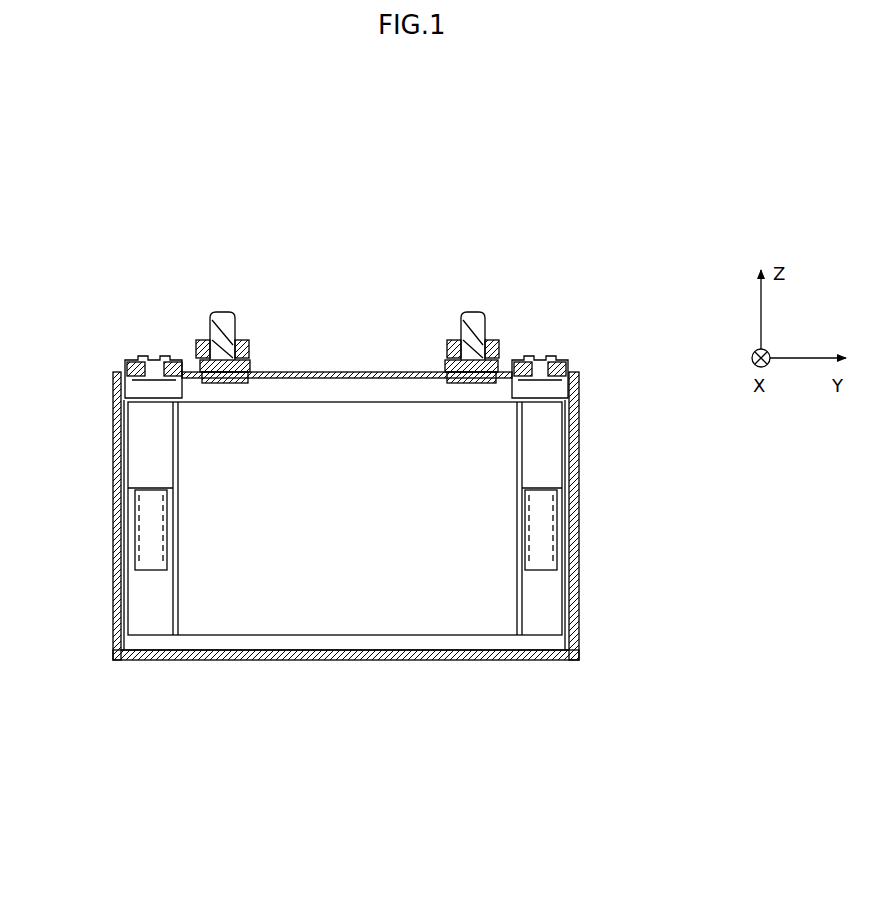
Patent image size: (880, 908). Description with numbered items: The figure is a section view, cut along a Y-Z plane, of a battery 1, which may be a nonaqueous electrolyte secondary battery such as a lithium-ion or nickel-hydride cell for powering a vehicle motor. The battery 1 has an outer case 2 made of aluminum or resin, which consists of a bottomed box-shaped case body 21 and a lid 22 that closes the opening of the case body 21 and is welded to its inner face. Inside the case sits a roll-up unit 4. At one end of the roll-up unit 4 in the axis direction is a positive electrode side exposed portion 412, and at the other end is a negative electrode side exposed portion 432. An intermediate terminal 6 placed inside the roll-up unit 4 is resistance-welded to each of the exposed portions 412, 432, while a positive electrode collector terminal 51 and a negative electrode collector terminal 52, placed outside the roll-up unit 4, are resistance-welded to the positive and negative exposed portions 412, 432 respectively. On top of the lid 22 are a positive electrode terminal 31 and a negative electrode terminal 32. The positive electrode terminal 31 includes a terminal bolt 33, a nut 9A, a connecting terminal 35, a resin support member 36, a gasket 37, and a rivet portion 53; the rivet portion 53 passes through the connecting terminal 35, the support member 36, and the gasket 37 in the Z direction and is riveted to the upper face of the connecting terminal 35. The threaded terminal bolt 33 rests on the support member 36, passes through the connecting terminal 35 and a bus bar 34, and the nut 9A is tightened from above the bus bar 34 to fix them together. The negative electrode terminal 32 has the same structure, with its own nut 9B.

The battery 1 is at (582, 170).
The outer case 2 is at (292, 662).
The case body 21 is at (250, 662).
The lid 22 is at (340, 372).
The roll-up unit 4 is at (375, 615).
The intermediate terminal 6 is at (136, 525).
The nut 9A is at (233, 342).
The negative terminal 9B is at (462, 344).
The positive electrode terminal 31 is at (204, 293).
The negative electrode terminal 32 is at (496, 293).
The terminal bolt 33 is at (205, 338).
The bus bar 34 is at (255, 345).
The connecting terminal 35 is at (200, 360).
The support member 36 is at (255, 368).
The gasket 37 is at (112, 380).
The positive electrode collector terminal 51 is at (140, 435).
The negative electrode collector terminal 52 is at (560, 435).
The rivet portion 53 is at (135, 358).
The positive electrode side exposed portion 412 is at (165, 625).
The negative electrode side exposed portion 432 is at (540, 625).